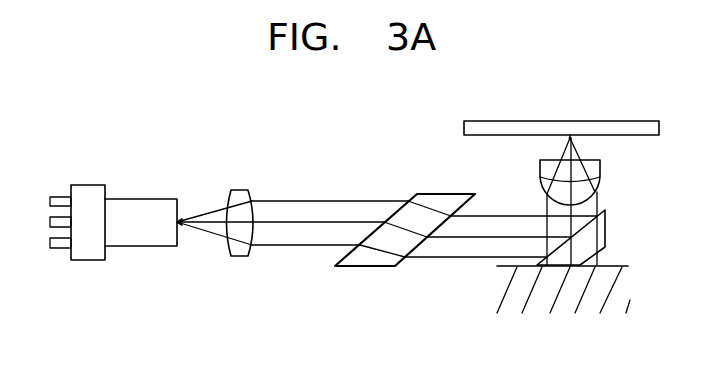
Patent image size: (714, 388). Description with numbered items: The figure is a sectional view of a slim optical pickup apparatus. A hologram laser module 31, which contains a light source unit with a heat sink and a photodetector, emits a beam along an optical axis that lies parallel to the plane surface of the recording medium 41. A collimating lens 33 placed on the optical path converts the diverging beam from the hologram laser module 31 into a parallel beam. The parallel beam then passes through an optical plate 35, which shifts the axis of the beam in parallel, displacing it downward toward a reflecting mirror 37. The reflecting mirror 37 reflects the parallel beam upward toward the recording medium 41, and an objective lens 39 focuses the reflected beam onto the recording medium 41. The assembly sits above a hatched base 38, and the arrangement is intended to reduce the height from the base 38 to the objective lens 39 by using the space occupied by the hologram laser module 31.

The hologram laser module 31 is at (90, 185).
The collimating lens 33 is at (240, 190).
The optical plate 35 is at (443, 194).
The reflecting mirror 37 is at (606, 233).
The base 38 is at (570, 302).
The objective lens 39 is at (602, 178).
The recording medium 41 is at (617, 129).